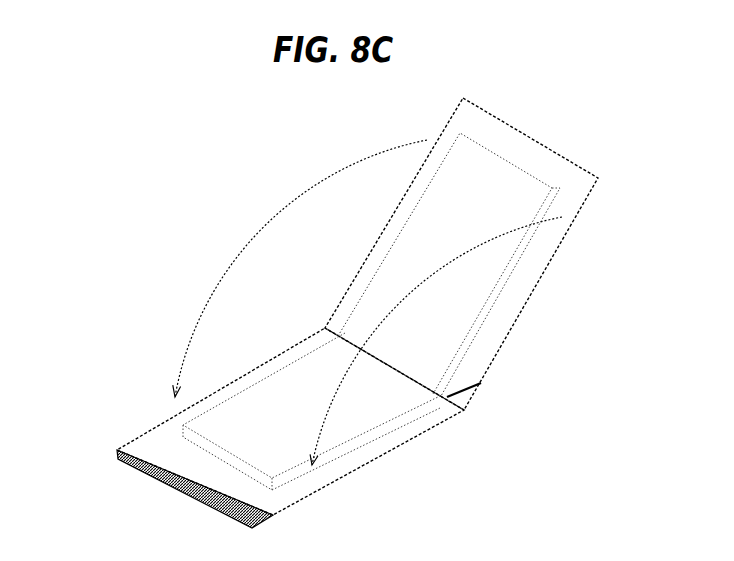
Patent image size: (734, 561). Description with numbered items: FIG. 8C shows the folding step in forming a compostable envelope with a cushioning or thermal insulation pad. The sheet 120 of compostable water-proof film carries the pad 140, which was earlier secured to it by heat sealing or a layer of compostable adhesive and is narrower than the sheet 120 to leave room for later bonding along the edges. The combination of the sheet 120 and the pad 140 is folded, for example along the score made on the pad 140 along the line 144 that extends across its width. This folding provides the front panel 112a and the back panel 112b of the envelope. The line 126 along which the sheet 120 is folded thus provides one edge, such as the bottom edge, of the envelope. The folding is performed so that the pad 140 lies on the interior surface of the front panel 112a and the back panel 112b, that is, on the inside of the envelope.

The sheet 120 is at (415, 306).
The front panel 112a is at (372, 440).
The back panel 112b is at (505, 325).
The line 126 is at (445, 397).
The pad 140 is at (500, 178).
The line 144 is at (355, 337).